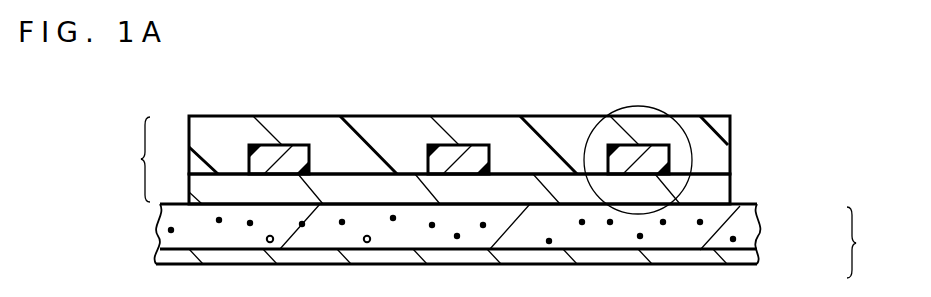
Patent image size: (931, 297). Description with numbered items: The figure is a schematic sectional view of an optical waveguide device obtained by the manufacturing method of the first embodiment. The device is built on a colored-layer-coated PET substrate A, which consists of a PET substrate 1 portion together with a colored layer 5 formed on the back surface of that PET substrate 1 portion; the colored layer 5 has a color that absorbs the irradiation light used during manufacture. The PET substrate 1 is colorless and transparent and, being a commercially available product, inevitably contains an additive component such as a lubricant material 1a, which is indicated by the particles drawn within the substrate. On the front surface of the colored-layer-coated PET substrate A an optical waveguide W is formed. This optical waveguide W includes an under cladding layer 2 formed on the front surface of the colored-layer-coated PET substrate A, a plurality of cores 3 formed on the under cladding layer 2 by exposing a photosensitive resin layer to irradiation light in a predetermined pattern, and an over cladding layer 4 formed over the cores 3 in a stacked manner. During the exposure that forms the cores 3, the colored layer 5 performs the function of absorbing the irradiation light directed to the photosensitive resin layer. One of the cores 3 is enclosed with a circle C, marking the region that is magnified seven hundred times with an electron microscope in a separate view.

The PET substrate 1 is at (750, 223).
The lubricant material 1a is at (219, 220).
The under cladding layer 2 is at (713, 192).
The cores 3 is at (458, 160).
The over cladding layer 4 is at (570, 133).
The colored layer 5 is at (750, 256).
The optical waveguide W is at (126, 159).
The colored-layer-coated PET substrate A is at (868, 242).
The circle C is at (640, 106).